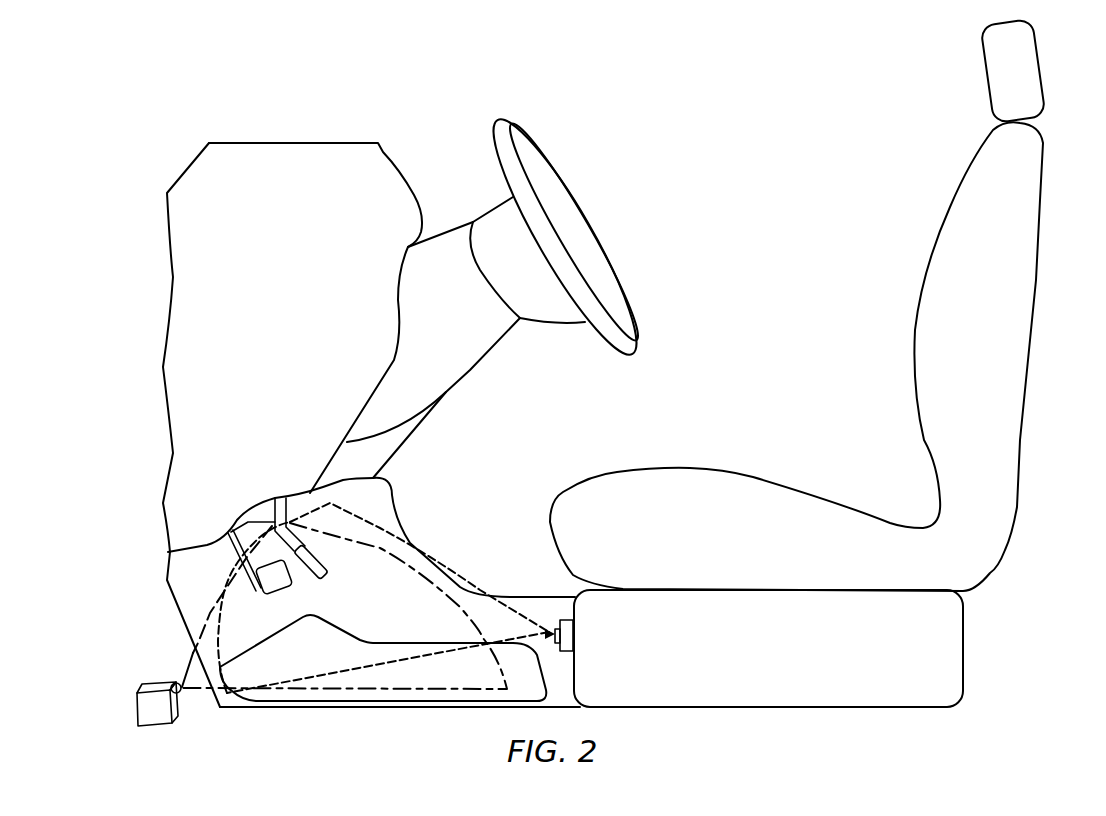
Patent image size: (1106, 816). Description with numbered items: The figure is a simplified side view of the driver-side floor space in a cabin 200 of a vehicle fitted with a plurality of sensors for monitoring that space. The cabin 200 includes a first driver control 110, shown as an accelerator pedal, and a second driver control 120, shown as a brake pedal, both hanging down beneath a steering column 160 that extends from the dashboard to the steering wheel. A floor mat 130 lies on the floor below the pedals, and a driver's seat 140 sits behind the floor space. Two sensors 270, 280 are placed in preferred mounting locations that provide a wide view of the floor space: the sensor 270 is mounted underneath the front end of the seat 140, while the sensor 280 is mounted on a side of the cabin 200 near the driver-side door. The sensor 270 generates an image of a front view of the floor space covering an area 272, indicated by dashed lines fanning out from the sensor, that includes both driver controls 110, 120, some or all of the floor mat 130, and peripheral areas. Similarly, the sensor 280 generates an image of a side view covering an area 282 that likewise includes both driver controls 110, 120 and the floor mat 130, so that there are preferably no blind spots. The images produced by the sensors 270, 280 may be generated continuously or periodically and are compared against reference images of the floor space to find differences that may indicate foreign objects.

The cabin 200 is at (733, 93).
The steering column 160 is at (467, 337).
The driver's seat 140 is at (747, 547).
The sensor 270 is at (568, 637).
The area 272 is at (380, 522).
The area 282 is at (210, 608).
The sensor 280 is at (165, 686).
The first driver control 110 is at (330, 572).
The second driver control 120 is at (272, 577).
The floor mat 130 is at (525, 687).